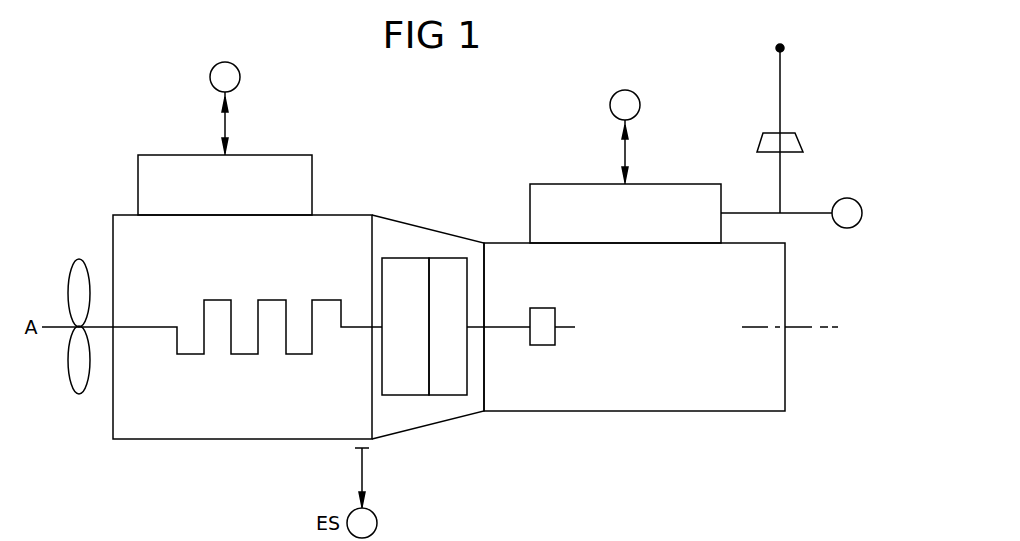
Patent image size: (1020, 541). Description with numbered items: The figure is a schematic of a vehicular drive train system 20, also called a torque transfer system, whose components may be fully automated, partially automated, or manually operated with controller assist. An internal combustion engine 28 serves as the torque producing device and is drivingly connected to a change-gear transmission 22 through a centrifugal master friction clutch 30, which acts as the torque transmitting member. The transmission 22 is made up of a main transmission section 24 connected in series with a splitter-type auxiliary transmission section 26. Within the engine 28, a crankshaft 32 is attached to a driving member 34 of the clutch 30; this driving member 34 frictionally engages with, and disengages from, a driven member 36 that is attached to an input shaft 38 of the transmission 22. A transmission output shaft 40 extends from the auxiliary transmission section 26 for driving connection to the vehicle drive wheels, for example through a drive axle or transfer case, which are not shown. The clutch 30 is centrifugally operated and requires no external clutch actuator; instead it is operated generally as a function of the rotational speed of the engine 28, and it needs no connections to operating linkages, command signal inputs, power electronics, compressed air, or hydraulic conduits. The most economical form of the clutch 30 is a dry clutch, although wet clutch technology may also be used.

The vehicular drive train system 20 is at (352, 105).
The change-gear transmission 22 is at (692, 440).
The main transmission section 24 is at (535, 411).
The splitter-type auxiliary transmission section 26 is at (721, 402).
The internal combustion engine 28 is at (162, 441).
The centrifugal master friction clutch 30 is at (458, 205).
The crankshaft 32 is at (204, 310).
The driving member 34 is at (445, 385).
The driven member 36 is at (407, 265).
The input shaft 38 is at (567, 328).
The transmission output shaft 40 is at (803, 322).